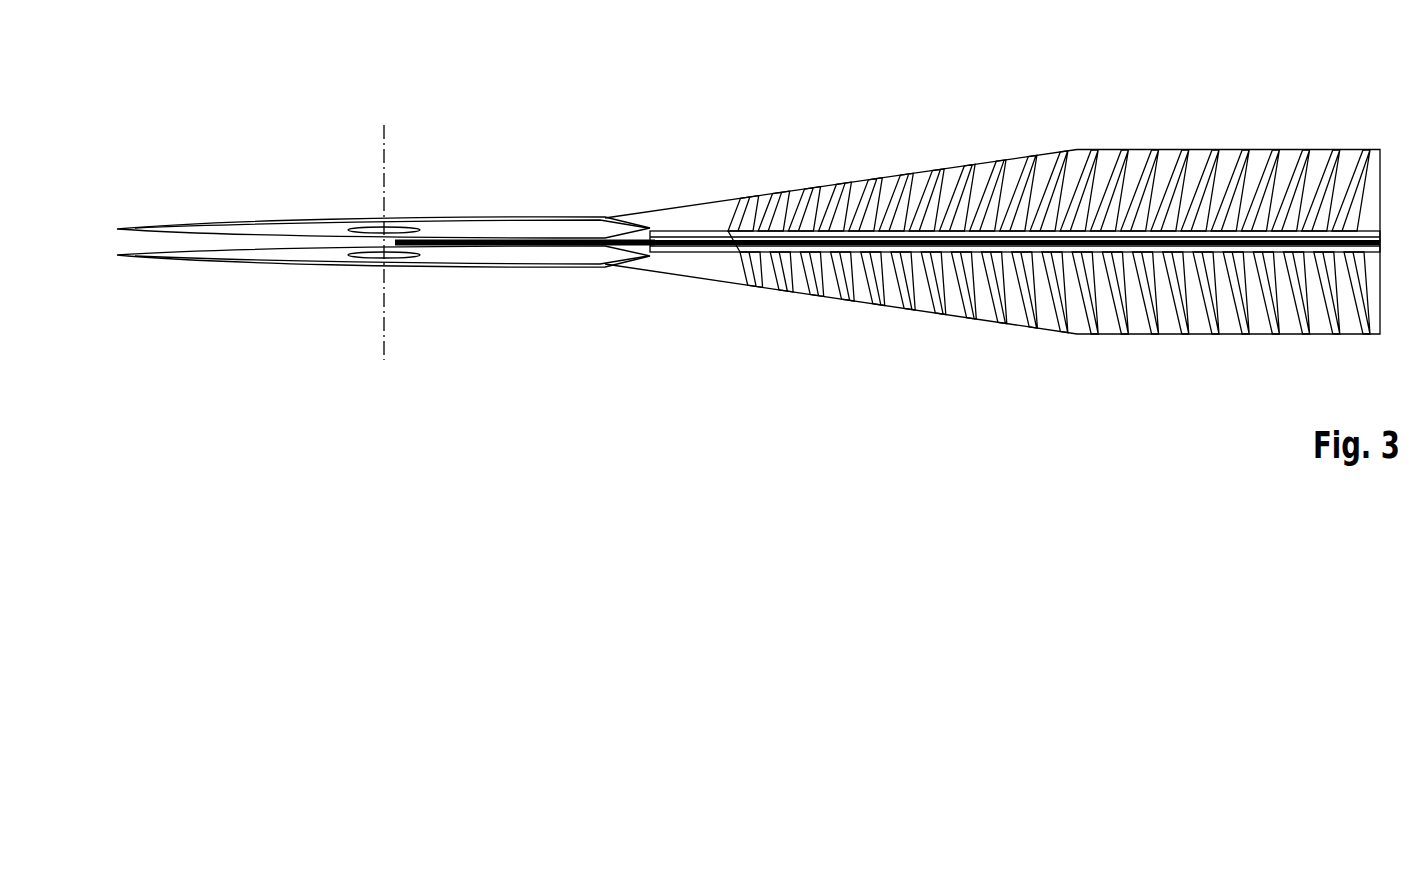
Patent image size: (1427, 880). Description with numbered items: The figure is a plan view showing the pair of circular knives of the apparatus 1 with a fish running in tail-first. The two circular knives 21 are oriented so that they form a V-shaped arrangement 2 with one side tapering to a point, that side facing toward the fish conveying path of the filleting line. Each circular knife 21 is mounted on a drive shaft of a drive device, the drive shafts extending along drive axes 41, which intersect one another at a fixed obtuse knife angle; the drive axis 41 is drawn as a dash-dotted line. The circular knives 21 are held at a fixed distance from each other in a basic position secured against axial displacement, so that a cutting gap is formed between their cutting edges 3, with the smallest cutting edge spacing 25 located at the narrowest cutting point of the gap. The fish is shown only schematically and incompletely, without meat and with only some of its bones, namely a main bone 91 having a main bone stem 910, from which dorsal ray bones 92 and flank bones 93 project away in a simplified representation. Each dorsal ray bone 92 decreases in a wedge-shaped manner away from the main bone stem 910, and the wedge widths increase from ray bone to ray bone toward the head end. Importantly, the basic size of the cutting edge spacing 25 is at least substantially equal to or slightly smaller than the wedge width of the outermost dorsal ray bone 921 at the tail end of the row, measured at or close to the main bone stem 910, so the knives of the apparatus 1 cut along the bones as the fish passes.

The apparatus 1 is at (430, 110).
The V-shaped arrangement 2 is at (594, 284).
The circular knives 21 is at (275, 216).
The cutting edges 3 is at (316, 237).
The cutting edge spacing 25 is at (391, 240).
The drive axes 41 is at (383, 135).
The main bone 91 is at (946, 333).
The dorsal ray bones 92 is at (876, 236).
The outermost dorsal ray bone 921 is at (405, 246).
The flank bones 93 is at (1125, 149).
The main bone stem 910 is at (757, 262).